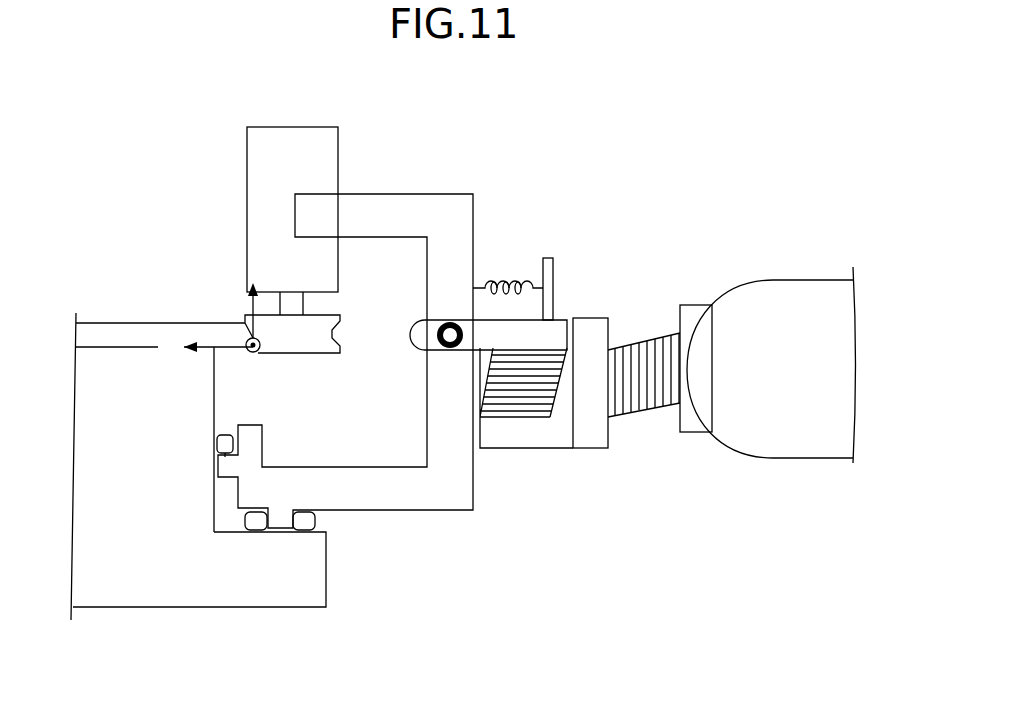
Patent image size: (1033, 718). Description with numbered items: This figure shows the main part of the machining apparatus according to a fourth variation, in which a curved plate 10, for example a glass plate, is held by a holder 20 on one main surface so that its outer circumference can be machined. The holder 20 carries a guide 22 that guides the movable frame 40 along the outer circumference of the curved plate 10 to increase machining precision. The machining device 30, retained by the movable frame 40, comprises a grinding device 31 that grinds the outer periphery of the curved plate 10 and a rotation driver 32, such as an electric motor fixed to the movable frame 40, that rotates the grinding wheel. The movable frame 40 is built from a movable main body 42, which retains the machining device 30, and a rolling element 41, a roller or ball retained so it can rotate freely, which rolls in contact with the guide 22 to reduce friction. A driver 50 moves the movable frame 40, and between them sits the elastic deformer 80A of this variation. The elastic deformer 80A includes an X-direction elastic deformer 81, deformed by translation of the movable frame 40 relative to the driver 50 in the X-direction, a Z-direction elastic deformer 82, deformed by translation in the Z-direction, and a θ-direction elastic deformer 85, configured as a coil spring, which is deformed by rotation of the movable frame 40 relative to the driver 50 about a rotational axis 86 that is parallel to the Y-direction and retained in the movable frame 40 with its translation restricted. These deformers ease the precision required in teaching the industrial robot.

The curved plate 10 is at (153, 322).
The holder 20 is at (98, 440).
The guide 22 is at (205, 523).
The machining device 30 is at (425, 122).
The grinding device 31 is at (313, 330).
The rotation driver 32 is at (307, 257).
The movable frame 40 is at (450, 562).
The rolling element 41 is at (222, 445).
The movable main body 42 is at (430, 497).
The driver 50 is at (797, 270).
The elastic deformer 80A is at (688, 205).
The X-direction elastic deformer 81 is at (558, 344).
The Z-direction elastic deformer 82 is at (646, 330).
The θ-direction elastic deformer 85 is at (519, 268).
The rotational axis 86 is at (452, 325).